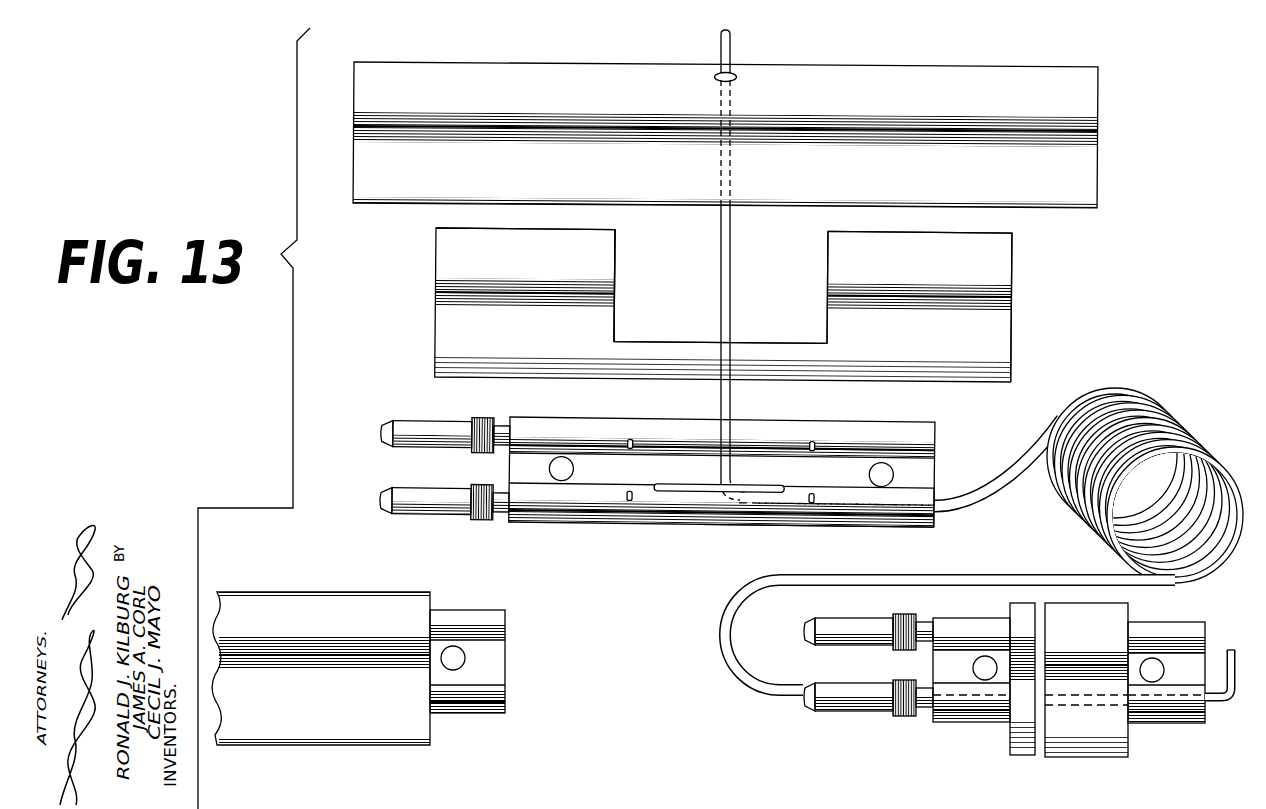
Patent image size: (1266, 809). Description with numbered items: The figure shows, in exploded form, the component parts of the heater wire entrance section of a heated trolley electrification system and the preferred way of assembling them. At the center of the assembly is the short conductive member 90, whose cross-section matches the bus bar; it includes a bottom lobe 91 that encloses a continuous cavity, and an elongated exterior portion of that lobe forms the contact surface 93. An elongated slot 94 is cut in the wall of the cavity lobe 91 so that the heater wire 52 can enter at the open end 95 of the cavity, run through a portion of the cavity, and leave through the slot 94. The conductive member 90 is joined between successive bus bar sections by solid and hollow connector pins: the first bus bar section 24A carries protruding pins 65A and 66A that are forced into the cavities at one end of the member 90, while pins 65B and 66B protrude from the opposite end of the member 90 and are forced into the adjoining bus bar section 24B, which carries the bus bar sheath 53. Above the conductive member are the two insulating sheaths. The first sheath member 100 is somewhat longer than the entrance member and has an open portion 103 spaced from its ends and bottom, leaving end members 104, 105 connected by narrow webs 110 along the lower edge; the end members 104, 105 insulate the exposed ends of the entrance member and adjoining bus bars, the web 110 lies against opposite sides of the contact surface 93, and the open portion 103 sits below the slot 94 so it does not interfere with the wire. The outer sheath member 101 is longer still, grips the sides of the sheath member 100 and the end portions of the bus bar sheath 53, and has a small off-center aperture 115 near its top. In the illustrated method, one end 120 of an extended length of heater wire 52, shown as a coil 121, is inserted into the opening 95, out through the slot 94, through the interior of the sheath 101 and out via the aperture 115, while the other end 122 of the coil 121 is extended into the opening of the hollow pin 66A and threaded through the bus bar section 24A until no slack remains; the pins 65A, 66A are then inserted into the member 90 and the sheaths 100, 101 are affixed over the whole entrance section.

The sheath member 101 is at (1050, 178).
The first sheath member 100 is at (978, 345).
The end member 104 is at (537, 262).
The end member 105 is at (927, 266).
The open portion 103 is at (797, 291).
The aperture 115 is at (738, 71).
The web 110 is at (655, 347).
The heater wire 52 is at (734, 394).
The one end of heater wire 120 is at (1023, 448).
The coil 121 is at (1178, 430).
The other end of heater wire 122 is at (1045, 575).
The conductive member 90 is at (928, 437).
The bottom lobe 91 is at (893, 497).
The contact surface 93 is at (830, 527).
The elongated slot 94 is at (693, 488).
The open end 95 is at (935, 495).
The connector pin 65B is at (404, 420).
The connector pin 66B is at (395, 487).
The connector pin 65A is at (873, 618).
The connector pin 66A is at (850, 712).
The first bus bar section 24A is at (994, 618).
The adjoining bus bar section 24B is at (1175, 723).
The bus bar sheath 53 is at (1107, 608).